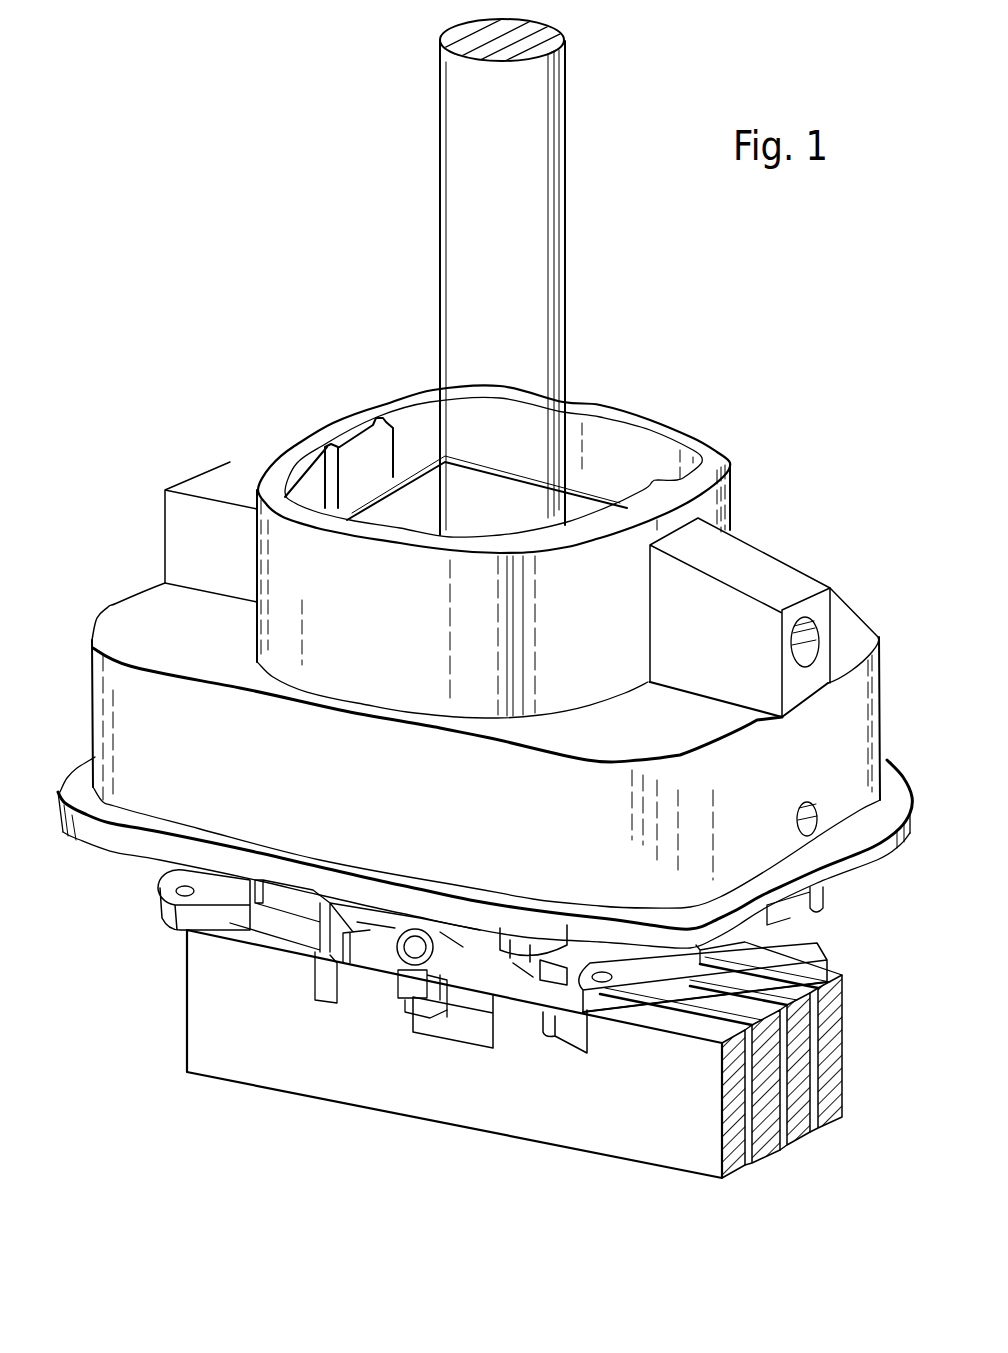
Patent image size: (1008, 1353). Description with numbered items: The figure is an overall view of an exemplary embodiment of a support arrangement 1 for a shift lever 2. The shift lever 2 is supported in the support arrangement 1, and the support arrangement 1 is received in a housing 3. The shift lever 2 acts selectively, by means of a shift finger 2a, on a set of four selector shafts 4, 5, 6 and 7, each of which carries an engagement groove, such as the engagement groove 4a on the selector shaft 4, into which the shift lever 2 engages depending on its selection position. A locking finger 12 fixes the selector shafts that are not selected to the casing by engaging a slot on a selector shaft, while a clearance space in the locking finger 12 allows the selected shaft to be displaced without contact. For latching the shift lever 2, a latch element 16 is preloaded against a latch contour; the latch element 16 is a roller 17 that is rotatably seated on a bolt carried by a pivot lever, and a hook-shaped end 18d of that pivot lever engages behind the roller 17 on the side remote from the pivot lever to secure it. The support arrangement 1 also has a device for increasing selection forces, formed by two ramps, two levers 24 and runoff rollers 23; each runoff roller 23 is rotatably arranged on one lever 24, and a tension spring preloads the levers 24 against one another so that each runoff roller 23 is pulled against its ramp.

The support arrangement 1 is at (340, 363).
The shift lever 2 is at (457, 207).
The shift finger 2a is at (470, 1000).
The housing 3 is at (827, 808).
The selector shaft 4 is at (738, 1158).
The engagement groove 4a is at (475, 1010).
The selector shaft 5 is at (768, 1145).
The selector shaft 6 is at (798, 1125).
The selector shaft 7 is at (840, 1108).
The locking finger 12 is at (565, 1020).
The latch element 16 is at (393, 968).
The roller 17 is at (381, 984).
The hook-shaped end 18d is at (428, 985).
The runoff roller 23 is at (762, 968).
The lever 24 is at (163, 912).